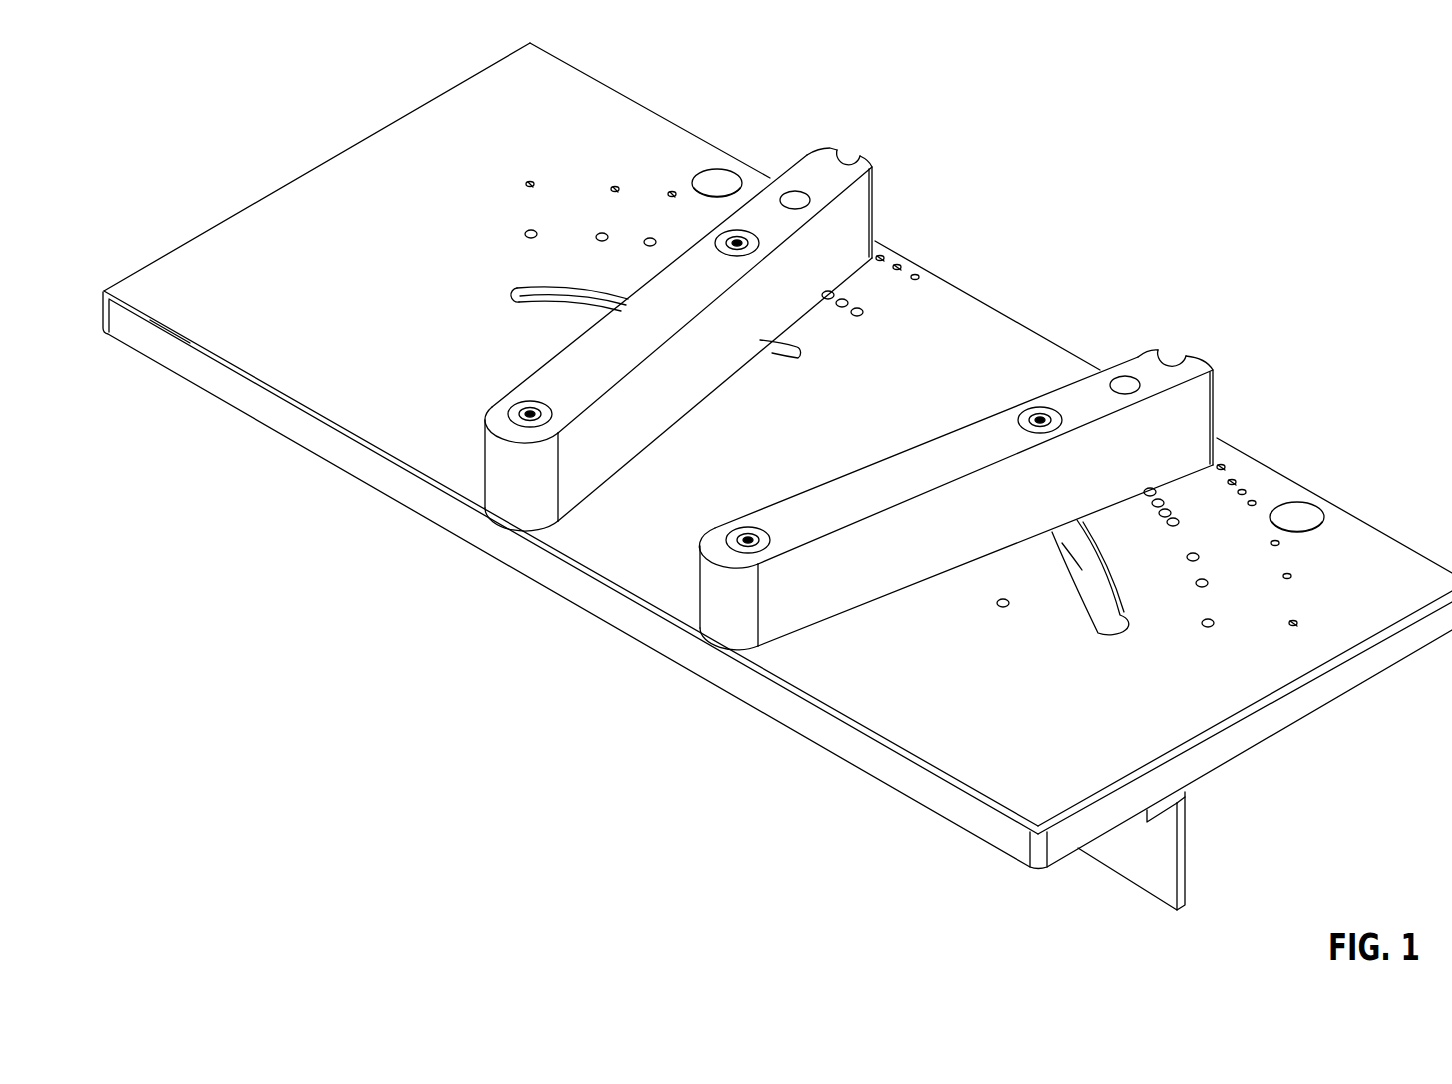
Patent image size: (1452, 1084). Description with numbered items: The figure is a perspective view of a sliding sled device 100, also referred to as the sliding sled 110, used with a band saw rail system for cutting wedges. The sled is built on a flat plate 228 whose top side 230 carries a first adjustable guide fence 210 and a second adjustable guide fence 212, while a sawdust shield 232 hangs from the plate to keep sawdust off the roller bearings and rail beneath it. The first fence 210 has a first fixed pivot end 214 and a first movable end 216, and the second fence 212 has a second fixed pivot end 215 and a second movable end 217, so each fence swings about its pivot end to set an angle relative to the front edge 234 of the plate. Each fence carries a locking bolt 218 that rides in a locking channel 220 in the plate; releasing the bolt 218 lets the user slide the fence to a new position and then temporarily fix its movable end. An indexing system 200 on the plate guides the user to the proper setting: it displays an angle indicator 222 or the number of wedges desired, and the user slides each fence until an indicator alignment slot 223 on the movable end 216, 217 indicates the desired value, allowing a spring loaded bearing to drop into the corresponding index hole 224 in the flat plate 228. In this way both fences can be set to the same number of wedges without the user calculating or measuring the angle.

The sliding sled device 100 is at (987, 127).
The sliding sled 110 is at (1012, 340).
The indexing system 200 is at (1257, 377).
The first adjustable guide fence 210 is at (922, 479).
The second adjustable guide fence 212 is at (842, 312).
The first fixed pivot end 214 is at (713, 610).
The second fixed pivot end 215 is at (503, 497).
The first movable end 216 is at (1150, 370).
The second movable end 217 is at (807, 155).
The locking bolt 218 is at (733, 250).
The locking channel 220 is at (548, 300).
The angle indicator 222 is at (528, 184).
The indicator alignment slot 223 is at (841, 156).
The index hole 224 is at (528, 237).
The flat plate 228 is at (641, 98).
The top side 230 is at (350, 176).
The sawdust shield 232 is at (1180, 862).
The front edge 234 is at (188, 360).